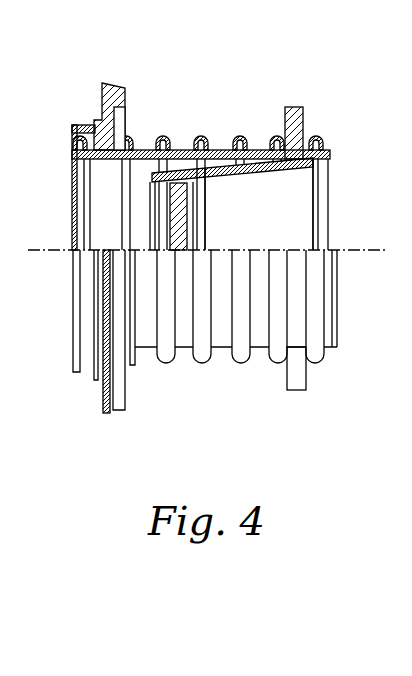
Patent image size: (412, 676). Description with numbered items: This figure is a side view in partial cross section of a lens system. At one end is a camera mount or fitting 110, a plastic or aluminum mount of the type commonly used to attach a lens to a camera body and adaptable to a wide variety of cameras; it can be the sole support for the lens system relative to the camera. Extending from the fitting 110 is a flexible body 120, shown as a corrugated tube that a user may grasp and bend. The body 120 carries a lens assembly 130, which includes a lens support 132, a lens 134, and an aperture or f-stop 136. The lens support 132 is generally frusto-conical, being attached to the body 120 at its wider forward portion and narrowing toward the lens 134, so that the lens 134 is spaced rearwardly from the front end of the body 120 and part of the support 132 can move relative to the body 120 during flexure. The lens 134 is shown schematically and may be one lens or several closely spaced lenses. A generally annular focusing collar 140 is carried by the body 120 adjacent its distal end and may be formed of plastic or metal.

The camera mount 110 is at (119, 405).
The flexible body 120 is at (223, 348).
The lens assembly 130 is at (214, 152).
The lens support 132 is at (258, 150).
The lens 134 is at (182, 175).
The aperture 136 is at (152, 182).
The focusing collar 140 is at (297, 378).